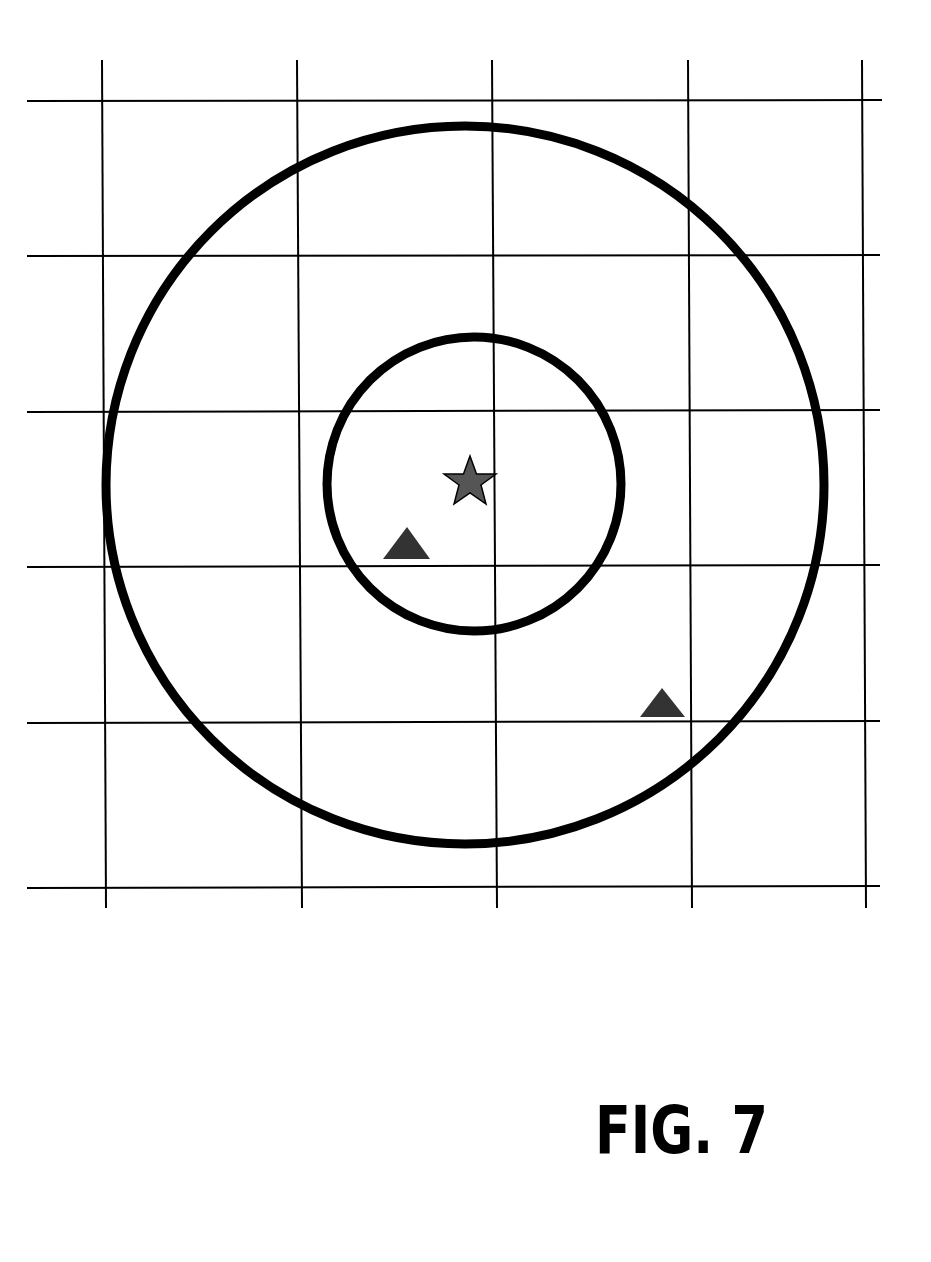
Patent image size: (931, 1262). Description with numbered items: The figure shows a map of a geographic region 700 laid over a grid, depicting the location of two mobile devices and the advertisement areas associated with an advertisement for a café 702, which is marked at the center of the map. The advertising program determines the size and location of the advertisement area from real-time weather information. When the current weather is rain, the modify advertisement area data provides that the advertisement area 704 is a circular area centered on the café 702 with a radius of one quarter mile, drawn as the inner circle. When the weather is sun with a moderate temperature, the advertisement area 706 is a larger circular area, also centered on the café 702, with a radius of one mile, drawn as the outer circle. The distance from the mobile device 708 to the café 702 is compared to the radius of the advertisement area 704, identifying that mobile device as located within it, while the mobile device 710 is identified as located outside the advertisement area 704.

The geographic region 700 is at (834, 55).
The café 702 is at (480, 508).
The advertisement area 704 is at (425, 622).
The advertisement area 706 is at (203, 228).
The mobile device 708 is at (387, 550).
The mobile device 710 is at (647, 703).